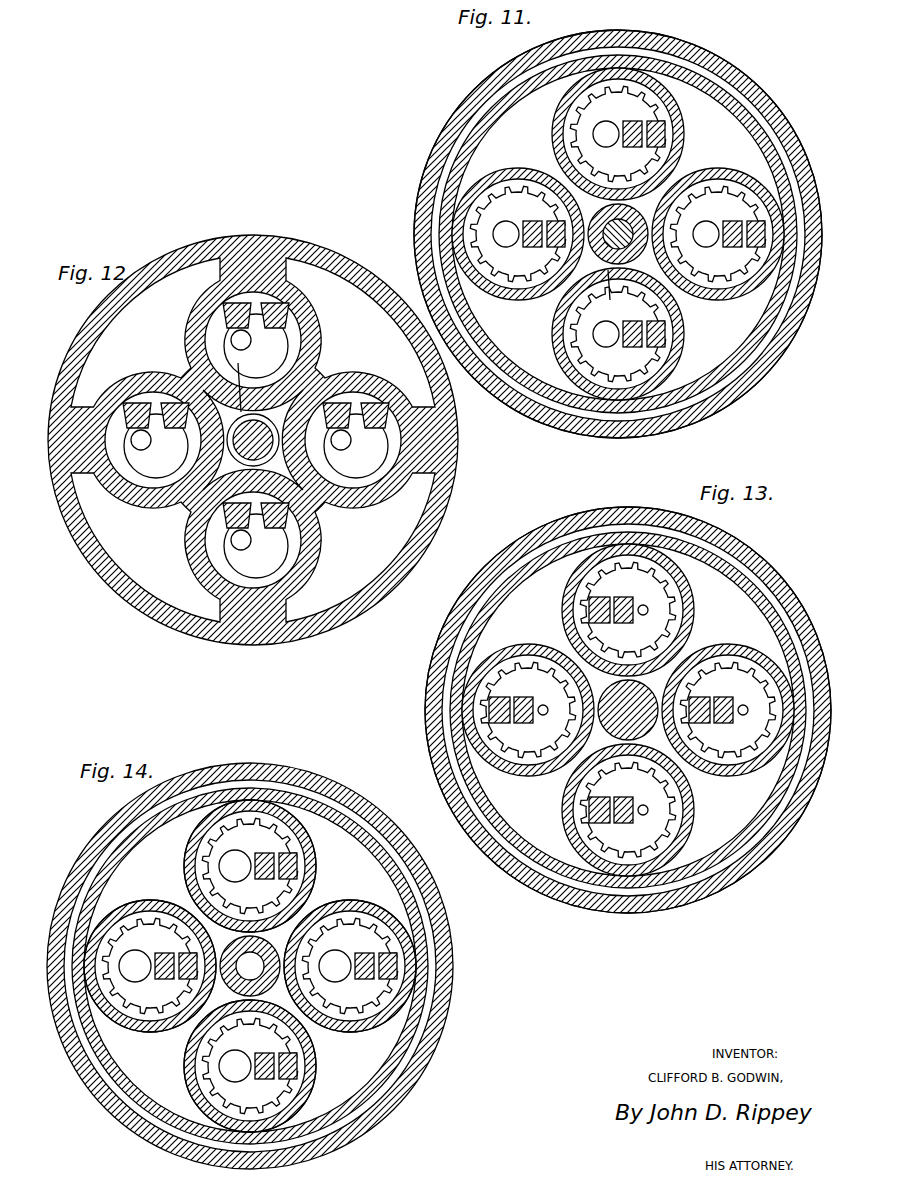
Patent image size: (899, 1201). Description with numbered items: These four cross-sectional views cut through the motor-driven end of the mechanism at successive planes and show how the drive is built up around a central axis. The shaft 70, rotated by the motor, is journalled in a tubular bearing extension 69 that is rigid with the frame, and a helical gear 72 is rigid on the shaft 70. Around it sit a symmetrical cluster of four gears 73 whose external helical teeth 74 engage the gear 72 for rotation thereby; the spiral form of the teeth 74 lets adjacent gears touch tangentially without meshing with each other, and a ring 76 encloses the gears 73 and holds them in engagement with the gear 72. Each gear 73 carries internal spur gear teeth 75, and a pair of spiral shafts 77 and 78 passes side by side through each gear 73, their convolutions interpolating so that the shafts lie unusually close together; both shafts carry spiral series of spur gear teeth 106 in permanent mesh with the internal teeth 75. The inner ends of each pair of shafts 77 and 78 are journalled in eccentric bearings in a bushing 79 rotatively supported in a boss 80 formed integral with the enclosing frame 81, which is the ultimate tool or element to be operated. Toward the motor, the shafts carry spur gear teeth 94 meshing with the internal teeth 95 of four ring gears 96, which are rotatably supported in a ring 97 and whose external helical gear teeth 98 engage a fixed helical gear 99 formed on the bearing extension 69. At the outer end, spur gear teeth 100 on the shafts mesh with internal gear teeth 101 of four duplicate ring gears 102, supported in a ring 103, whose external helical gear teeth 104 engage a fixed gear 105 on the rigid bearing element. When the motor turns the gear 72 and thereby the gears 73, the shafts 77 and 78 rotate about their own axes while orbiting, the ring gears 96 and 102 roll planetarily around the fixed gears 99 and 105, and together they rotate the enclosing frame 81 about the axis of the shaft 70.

In FIG. 11, the tubular bearing extension 69 is at (612, 293).
In FIG. 12, the tubular bearing extension 69 is at (240, 380).
In FIG. 11, the shaft 70 is at (650, 250).
In FIG. 12, the shaft 70 is at (222, 446).
In FIG. 13, the helical gear 72 is at (470, 698).
In FIG. 13, the gear 73 is at (570, 605).
In FIG. 13, the external helical teeth 74 is at (578, 572).
In FIG. 13, the spur gear teeth 75 is at (680, 600).
In FIG. 13, the ring 76 is at (755, 565).
In FIG. 11, the spiral shaft 77 is at (665, 137).
In FIG. 12, the spiral shaft 77 is at (285, 312).
In FIG. 13, the spiral shaft 77 is at (625, 605).
In FIG. 14, the spiral shaft 77 is at (305, 870).
In FIG. 11, the spiral shaft 78 is at (615, 352).
In FIG. 12, the spiral shaft 78 is at (228, 330).
In FIG. 13, the spiral shaft 78 is at (585, 600).
In FIG. 14, the spiral shaft 78 is at (237, 966).
In FIG. 12, the bushing 79 is at (225, 301).
In FIG. 12, the boss 80 is at (188, 316).
In FIG. 11, the enclosing frame 81 is at (478, 92).
In FIG. 12, the enclosing frame 81 is at (187, 240).
In FIG. 13, the enclosing frame 81 is at (770, 583).
In FIG. 14, the enclosing frame 81 is at (240, 765).
In FIG. 11, the spur gear teeth 94 is at (660, 118).
In FIG. 11, the internal teeth 95 is at (662, 101).
In FIG. 11, the ring gear 96 is at (675, 130).
In FIG. 11, the ring 97 is at (725, 90).
In FIG. 11, the external helical gear teeth 98 is at (700, 62).
In FIG. 11, the fixed helical gear 99 is at (648, 236).
In FIG. 14, the spur gear teeth 100 is at (268, 820).
In FIG. 14, the internal gear teeth 101 is at (222, 805).
In FIG. 14, the ring gear 102 is at (290, 850).
In FIG. 14, the ring 103 is at (440, 945).
In FIG. 14, the external helical gear teeth 104 is at (186, 862).
In FIG. 14, the fixed gear 105 is at (335, 966).
In FIG. 13, the spur gear teeth 106 is at (670, 588).